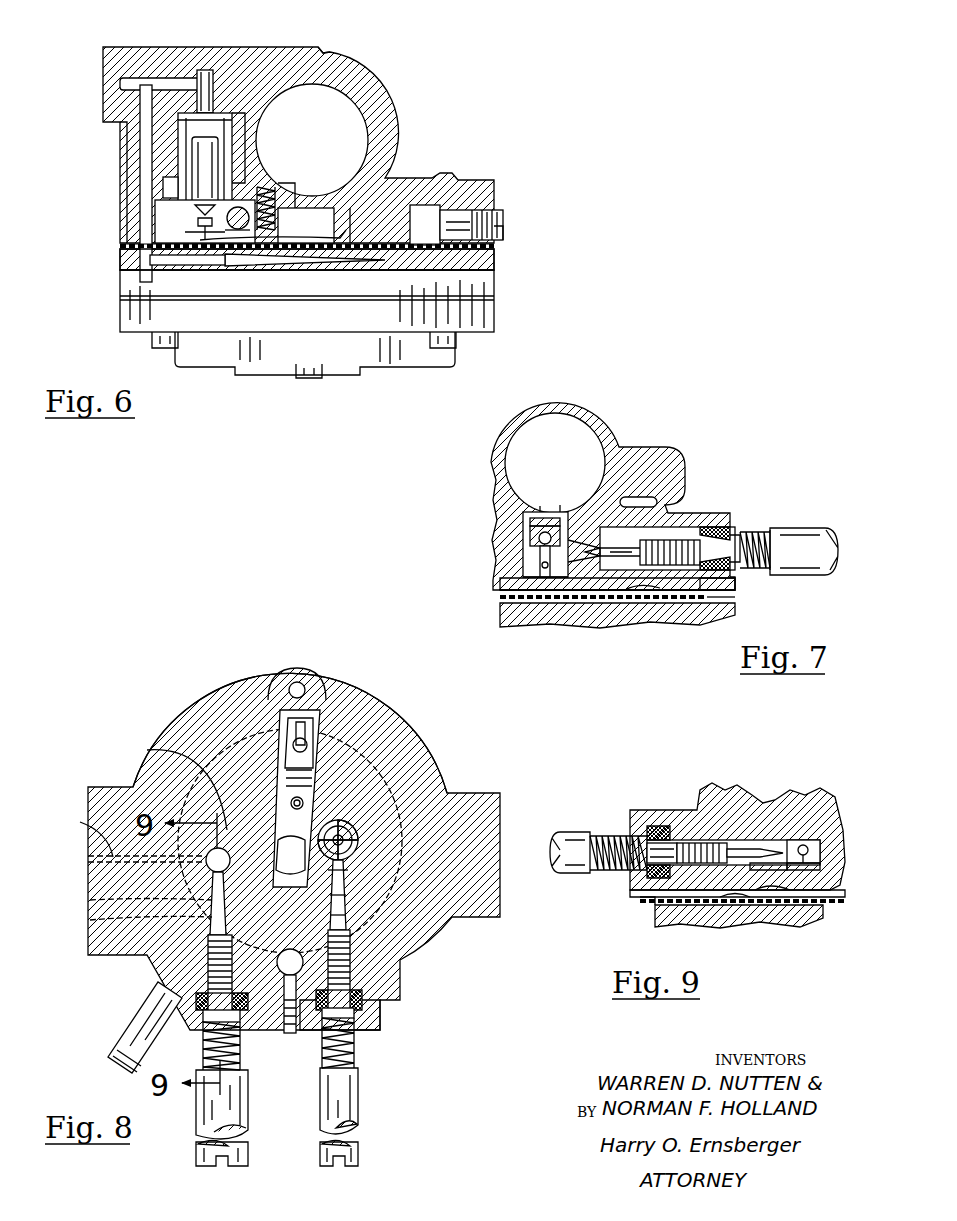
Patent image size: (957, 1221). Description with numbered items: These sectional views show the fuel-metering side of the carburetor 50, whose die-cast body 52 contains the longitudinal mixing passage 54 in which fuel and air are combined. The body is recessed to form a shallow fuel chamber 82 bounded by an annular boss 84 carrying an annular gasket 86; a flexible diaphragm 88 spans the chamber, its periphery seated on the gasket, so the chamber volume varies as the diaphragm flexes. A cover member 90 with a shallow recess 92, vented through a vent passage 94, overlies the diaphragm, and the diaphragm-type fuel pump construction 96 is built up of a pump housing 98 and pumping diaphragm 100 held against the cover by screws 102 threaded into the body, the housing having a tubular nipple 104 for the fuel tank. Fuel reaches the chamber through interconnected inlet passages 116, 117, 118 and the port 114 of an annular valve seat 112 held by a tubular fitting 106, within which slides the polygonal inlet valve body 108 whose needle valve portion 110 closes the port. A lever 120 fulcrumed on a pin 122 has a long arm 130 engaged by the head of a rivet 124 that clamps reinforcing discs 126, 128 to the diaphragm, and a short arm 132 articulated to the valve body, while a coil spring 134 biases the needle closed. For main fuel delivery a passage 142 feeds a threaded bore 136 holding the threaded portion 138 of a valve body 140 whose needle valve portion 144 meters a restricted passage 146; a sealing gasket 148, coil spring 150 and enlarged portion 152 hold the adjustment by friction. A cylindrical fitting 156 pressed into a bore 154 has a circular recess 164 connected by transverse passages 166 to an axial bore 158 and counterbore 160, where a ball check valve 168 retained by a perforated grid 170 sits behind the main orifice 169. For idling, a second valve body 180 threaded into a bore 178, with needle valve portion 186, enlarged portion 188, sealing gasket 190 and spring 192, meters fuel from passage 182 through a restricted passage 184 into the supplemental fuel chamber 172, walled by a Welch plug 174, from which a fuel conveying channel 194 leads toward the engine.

In FIG. 6, the carburetor 50 is at (397, 78).
In FIG. 7, the carburetor 50 is at (604, 400).
In FIG. 8, the carburetor 50 is at (264, 680).
In FIG. 9, the carburetor 50 is at (737, 836).
In FIG. 6, the carburetor body 52 is at (326, 50).
In FIG. 7, the carburetor body 52 is at (572, 405).
In FIG. 8, the carburetor body 52 is at (208, 706).
In FIG. 6, the mixing passage 54 is at (346, 118).
In FIG. 6, the fuel chamber 82 is at (398, 240).
In FIG. 7, the fuel chamber 82 is at (636, 595).
In FIG. 9, the fuel chamber 82 is at (722, 904).
In FIG. 6, the annular boss 84 is at (468, 225).
In FIG. 7, the annular boss 84 is at (737, 584).
In FIG. 9, the annular boss 84 is at (740, 892).
In FIG. 6, the annular gasket 86 is at (500, 232).
In FIG. 7, the annular gasket 86 is at (735, 598).
In FIG. 9, the annular gasket 86 is at (760, 903).
In FIG. 6, the diaphragm 88 is at (480, 247).
In FIG. 7, the diaphragm 88 is at (632, 594).
In FIG. 9, the diaphragm 88 is at (738, 904).
In FIG. 6, the cover member 90 is at (385, 256).
In FIG. 7, the cover member 90 is at (720, 600).
In FIG. 9, the cover member 90 is at (655, 906).
In FIG. 6, the shallow recess 92 is at (370, 262).
In FIG. 7, the shallow recess 92 is at (520, 612).
In FIG. 9, the shallow recess 92 is at (790, 915).
In FIG. 6, the vent passage 94 is at (148, 262).
In FIG. 6, the fuel pump construction 96 is at (112, 333).
In FIG. 6, the pump housing 98 is at (125, 306).
In FIG. 6, the pumping diaphragm 100 is at (150, 298).
In FIG. 6, the screws 102 is at (152, 346).
In FIG. 8, the tubular nipple 104 is at (118, 1043).
In FIG. 6, the tubular fitting 106 is at (170, 188).
In FIG. 6, the inlet valve body 108 is at (205, 160).
In FIG. 6, the needle valve portion 110 is at (200, 128).
In FIG. 6, the annular valve seat 112 is at (246, 105).
In FIG. 6, the port 114 is at (212, 113).
In FIG. 6, the inlet passage 116 is at (203, 78).
In FIG. 6, the inlet passage 117 is at (160, 83).
In FIG. 6, the inlet passage 118 is at (143, 95).
In FIG. 6, the lever 120 is at (135, 246).
In FIG. 8, the lever 120 is at (310, 722).
In FIG. 6, the pin 122 is at (175, 205).
In FIG. 8, the pin 122 is at (288, 724).
In FIG. 6, the headed rivet 124 is at (370, 240).
In FIG. 6, the reinforcing disc 126 is at (336, 240).
In FIG. 6, the reinforcing disc 128 is at (248, 222).
In FIG. 6, the long arm 130 is at (270, 218).
In FIG. 6, the short arm 132 is at (183, 229).
In FIG. 6, the coil spring 134 is at (283, 190).
In FIG. 7, the bore 136 is at (700, 533).
In FIG. 8, the bore 136 is at (350, 947).
In FIG. 7, the threaded portion 138 is at (690, 548).
In FIG. 8, the threaded portion 138 is at (350, 960).
In FIG. 7, the valve body 140 is at (742, 545).
In FIG. 8, the valve body 140 is at (355, 993).
In FIG. 7, the passage 142 is at (605, 562).
In FIG. 8, the passage 142 is at (344, 916).
In FIG. 7, the needle valve portion 144 is at (612, 548).
In FIG. 8, the needle valve portion 144 is at (350, 900).
In FIG. 7, the restricted passage 146 is at (620, 446).
In FIG. 8, the restricted passage 146 is at (344, 870).
In FIG. 7, the sealing gasket 148 is at (732, 530).
In FIG. 8, the sealing gasket 148 is at (366, 1006).
In FIG. 7, the coil spring 150 is at (772, 533).
In FIG. 8, the coil spring 150 is at (358, 1056).
In FIG. 7, the enlarged portion 152 is at (806, 528).
In FIG. 8, the enlarged portion 152 is at (363, 1102).
In FIG. 7, the bore 154 is at (528, 530).
In FIG. 7, the cylindrical fitting 156 is at (524, 518).
In FIG. 8, the cylindrical fitting 156 is at (358, 843).
In FIG. 7, the axial bore 158 is at (515, 586).
In FIG. 8, the axial bore 158 is at (352, 834).
In FIG. 7, the counterbore 160 is at (535, 538).
In FIG. 7, the circular recess 164 is at (538, 566).
In FIG. 8, the circular recess 164 is at (340, 868).
In FIG. 7, the transverse passages 166 is at (525, 577).
In FIG. 8, the transverse passages 166 is at (340, 822).
In FIG. 7, the ball check valve 168 is at (538, 552).
In FIG. 7, the main orifice 169 is at (560, 535).
In FIG. 7, the perforated grid 170 is at (592, 540).
In FIG. 8, the supplemental fuel chamber 172 is at (167, 747).
In FIG. 9, the supplemental fuel chamber 172 is at (812, 845).
In FIG. 9, the Welch plug 174 is at (781, 877).
In FIG. 8, the bore 178 is at (212, 946).
In FIG. 9, the bore 178 is at (728, 850).
In FIG. 8, the second valve body 180 is at (204, 994).
In FIG. 9, the second valve body 180 is at (660, 840).
In FIG. 8, the passage 182 is at (210, 921).
In FIG. 9, the passage 182 is at (776, 876).
In FIG. 8, the restricted passage 184 is at (216, 877).
In FIG. 9, the restricted passage 184 is at (806, 845).
In FIG. 8, the needle valve portion 186 is at (214, 904).
In FIG. 9, the needle valve portion 186 is at (780, 852).
In FIG. 8, the enlarged portion 188 is at (196, 1126).
In FIG. 9, the enlarged portion 188 is at (548, 840).
In FIG. 8, the sealing gasket 190 is at (204, 1012).
In FIG. 9, the sealing gasket 190 is at (660, 850).
In FIG. 8, the spring 192 is at (204, 1046).
In FIG. 9, the spring 192 is at (598, 834).
In FIG. 8, the fuel conveying channel 194 is at (80, 822).
In FIG. 9, the fuel conveying channel 194 is at (801, 840).